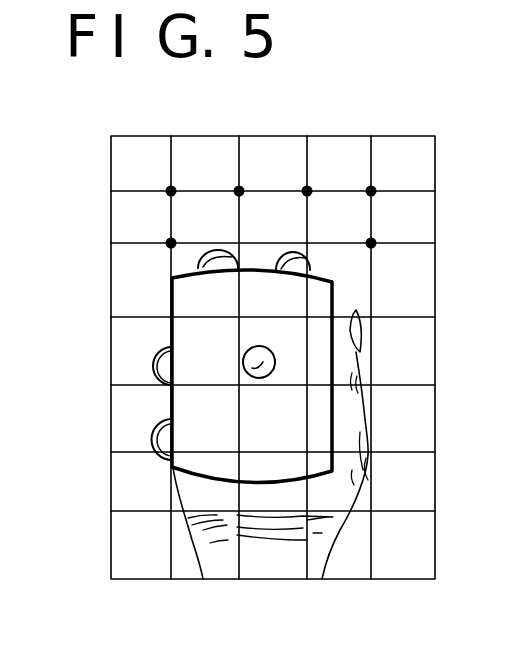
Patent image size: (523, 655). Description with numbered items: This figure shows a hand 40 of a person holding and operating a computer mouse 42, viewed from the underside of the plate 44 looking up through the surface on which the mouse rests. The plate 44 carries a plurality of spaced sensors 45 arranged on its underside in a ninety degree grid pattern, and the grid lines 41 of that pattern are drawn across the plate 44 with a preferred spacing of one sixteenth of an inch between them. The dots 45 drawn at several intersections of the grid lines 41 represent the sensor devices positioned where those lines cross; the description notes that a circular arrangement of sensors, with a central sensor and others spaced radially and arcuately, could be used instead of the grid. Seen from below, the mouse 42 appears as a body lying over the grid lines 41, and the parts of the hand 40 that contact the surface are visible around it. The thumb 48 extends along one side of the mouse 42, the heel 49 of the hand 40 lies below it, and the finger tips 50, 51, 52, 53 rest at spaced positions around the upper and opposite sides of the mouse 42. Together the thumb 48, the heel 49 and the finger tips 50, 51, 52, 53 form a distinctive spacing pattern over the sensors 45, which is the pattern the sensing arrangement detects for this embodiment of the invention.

The hand 40 is at (372, 424).
The grid lines 41 is at (171, 153).
The computer mouse 42 is at (323, 300).
The plate 44 is at (435, 205).
The sensors 45 is at (171, 192).
The thumb 48 is at (366, 375).
The heel 49 is at (227, 522).
The finger tip 50 is at (303, 268).
The finger tip 51 is at (208, 250).
The finger tip 52 is at (152, 364).
The finger tip 53 is at (152, 438).